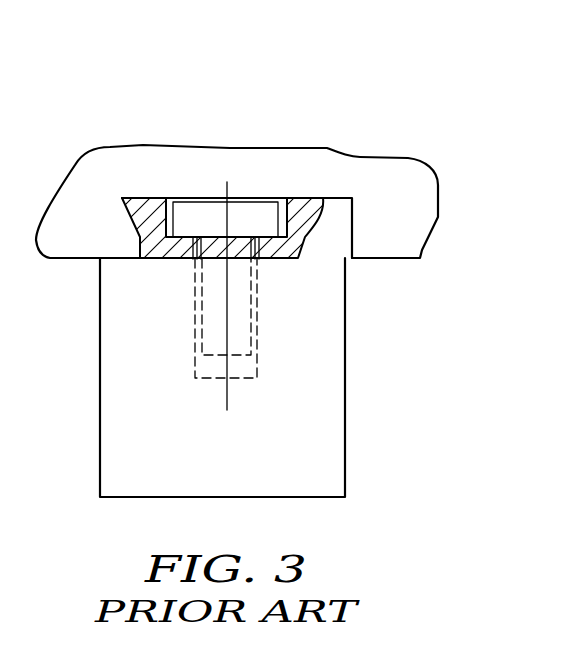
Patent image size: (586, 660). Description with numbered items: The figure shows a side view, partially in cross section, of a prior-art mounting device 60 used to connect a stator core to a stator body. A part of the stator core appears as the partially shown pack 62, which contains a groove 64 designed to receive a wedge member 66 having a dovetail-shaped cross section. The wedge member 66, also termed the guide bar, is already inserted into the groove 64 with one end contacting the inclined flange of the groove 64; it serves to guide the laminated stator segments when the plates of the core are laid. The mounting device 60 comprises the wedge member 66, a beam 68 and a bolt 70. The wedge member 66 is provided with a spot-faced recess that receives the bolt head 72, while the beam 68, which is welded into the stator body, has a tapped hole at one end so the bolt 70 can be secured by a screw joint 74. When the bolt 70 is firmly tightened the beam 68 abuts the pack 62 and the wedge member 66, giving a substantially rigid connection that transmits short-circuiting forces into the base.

The mounting device 60 is at (233, 117).
The pack 62 is at (417, 185).
The groove 64 is at (353, 237).
The wedge member 66 is at (147, 208).
The beam 68 is at (118, 432).
The bolt 70 is at (258, 248).
The bolt head 72 is at (262, 212).
The screw joint 74 is at (255, 378).